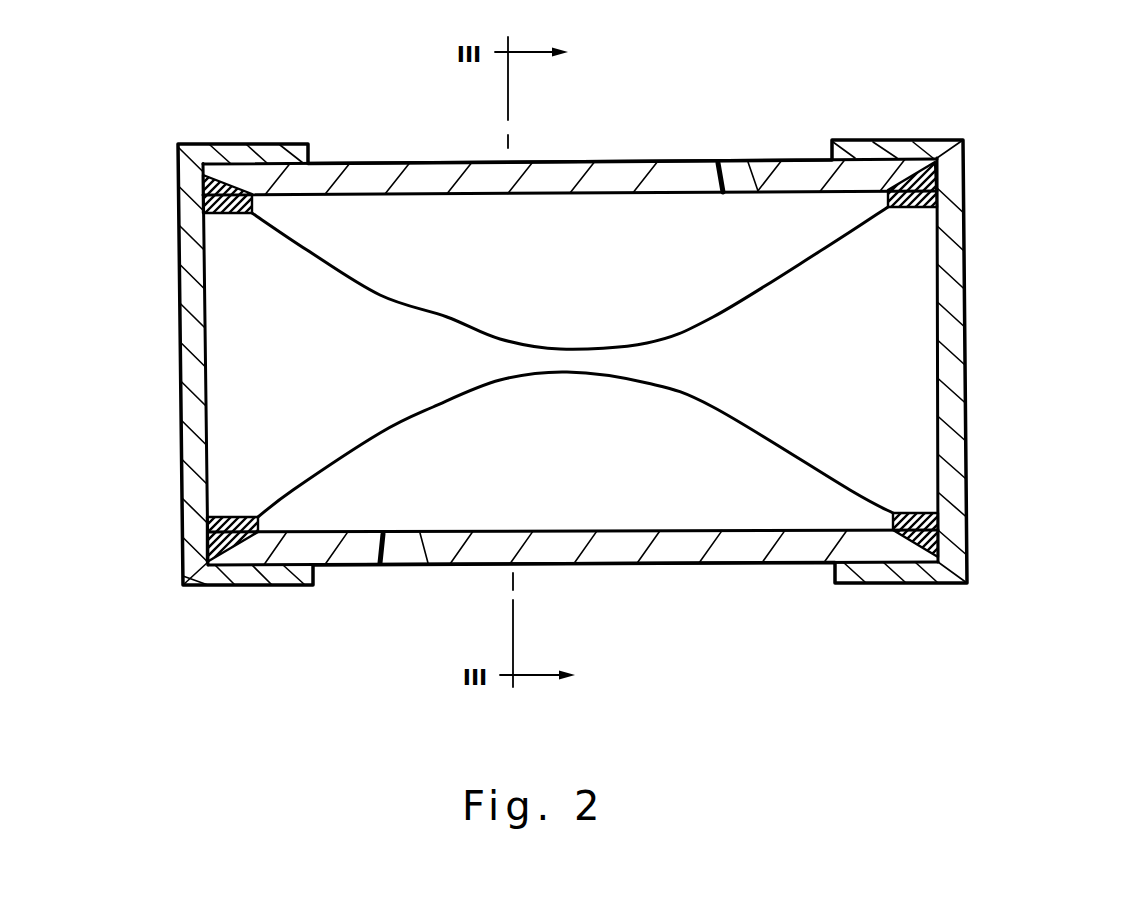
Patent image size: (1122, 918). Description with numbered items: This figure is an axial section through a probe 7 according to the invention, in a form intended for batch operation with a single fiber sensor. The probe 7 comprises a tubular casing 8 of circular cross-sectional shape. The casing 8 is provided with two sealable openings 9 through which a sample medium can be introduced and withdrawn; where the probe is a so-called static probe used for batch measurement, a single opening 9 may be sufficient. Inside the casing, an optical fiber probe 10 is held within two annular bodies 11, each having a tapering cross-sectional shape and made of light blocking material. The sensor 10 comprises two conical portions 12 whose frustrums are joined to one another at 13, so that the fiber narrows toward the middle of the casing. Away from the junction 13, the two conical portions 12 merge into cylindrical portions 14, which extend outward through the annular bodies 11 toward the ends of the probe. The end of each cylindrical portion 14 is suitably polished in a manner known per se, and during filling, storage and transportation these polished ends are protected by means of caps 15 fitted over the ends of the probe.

The probe 7 is at (793, 131).
The tubular casing 8 is at (601, 160).
The sealable opening 9 is at (738, 163).
The optical fiber probe 10 is at (440, 306).
The annular body 11 is at (212, 205).
The conical portion 12 is at (312, 298).
The junction of frustrums 13 is at (605, 365).
The cylindrical portion 14 is at (237, 435).
The cap 15 is at (195, 357).